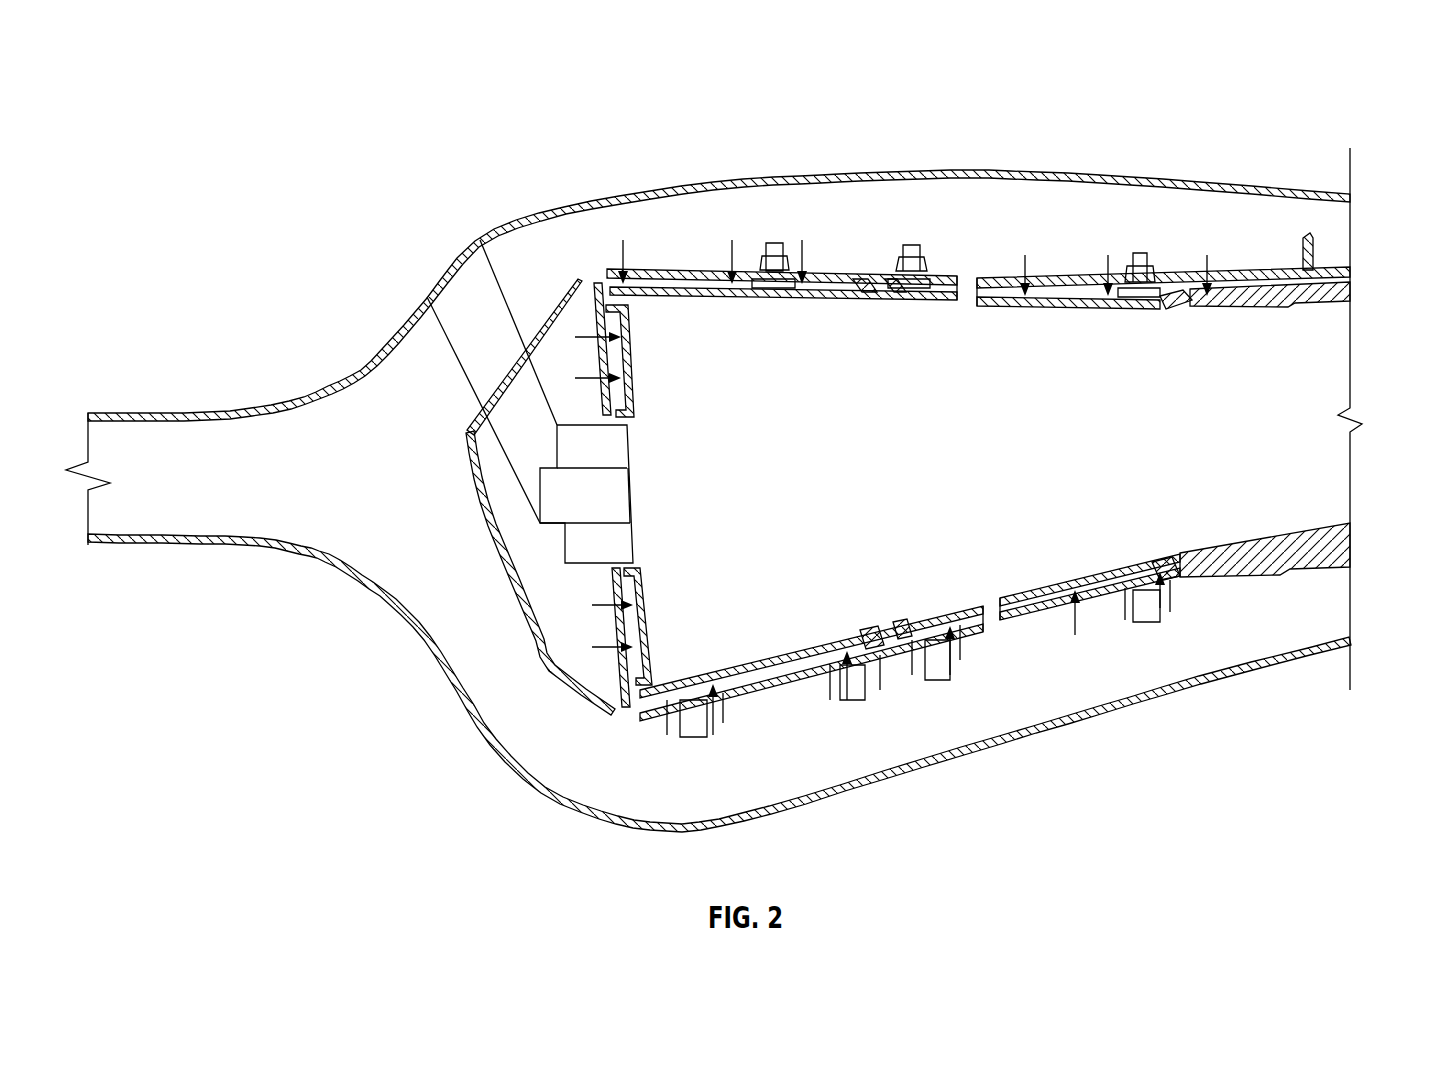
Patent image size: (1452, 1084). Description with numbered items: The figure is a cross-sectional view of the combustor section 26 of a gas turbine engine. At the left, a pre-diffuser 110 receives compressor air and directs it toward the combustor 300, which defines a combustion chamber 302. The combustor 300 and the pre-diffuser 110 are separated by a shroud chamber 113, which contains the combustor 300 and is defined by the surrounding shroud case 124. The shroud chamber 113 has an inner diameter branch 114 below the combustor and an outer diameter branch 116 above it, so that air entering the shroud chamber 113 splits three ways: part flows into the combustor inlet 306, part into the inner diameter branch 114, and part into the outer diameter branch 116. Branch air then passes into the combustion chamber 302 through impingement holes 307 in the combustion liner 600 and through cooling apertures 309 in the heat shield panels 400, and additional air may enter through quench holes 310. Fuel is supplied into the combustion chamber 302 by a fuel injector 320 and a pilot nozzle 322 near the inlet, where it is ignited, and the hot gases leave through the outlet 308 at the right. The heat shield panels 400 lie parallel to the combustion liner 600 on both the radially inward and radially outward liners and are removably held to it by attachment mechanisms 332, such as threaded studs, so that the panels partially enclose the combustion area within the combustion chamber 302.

The combustor section 26 is at (449, 107).
The pre-diffuser 110 is at (175, 436).
The shroud chamber 113 is at (563, 745).
The inner diameter branch 114 is at (1165, 673).
The outer diameter branch 116 is at (755, 225).
The shroud case 124 is at (940, 172).
The combustor 300 is at (983, 245).
The combustion chamber 302 is at (930, 490).
The inlet 306 is at (658, 461).
The impingement holes 307 is at (1170, 283).
The outlet 308 is at (1332, 457).
The cooling apertures 309 is at (1163, 313).
The quench holes 310 is at (967, 305).
The fuel injector 320 is at (495, 265).
The pilot nozzle 322 is at (637, 493).
The attachment mechanism 332 is at (937, 672).
The heat shield panels 400 is at (633, 357).
The combustion liner 600 is at (815, 275).